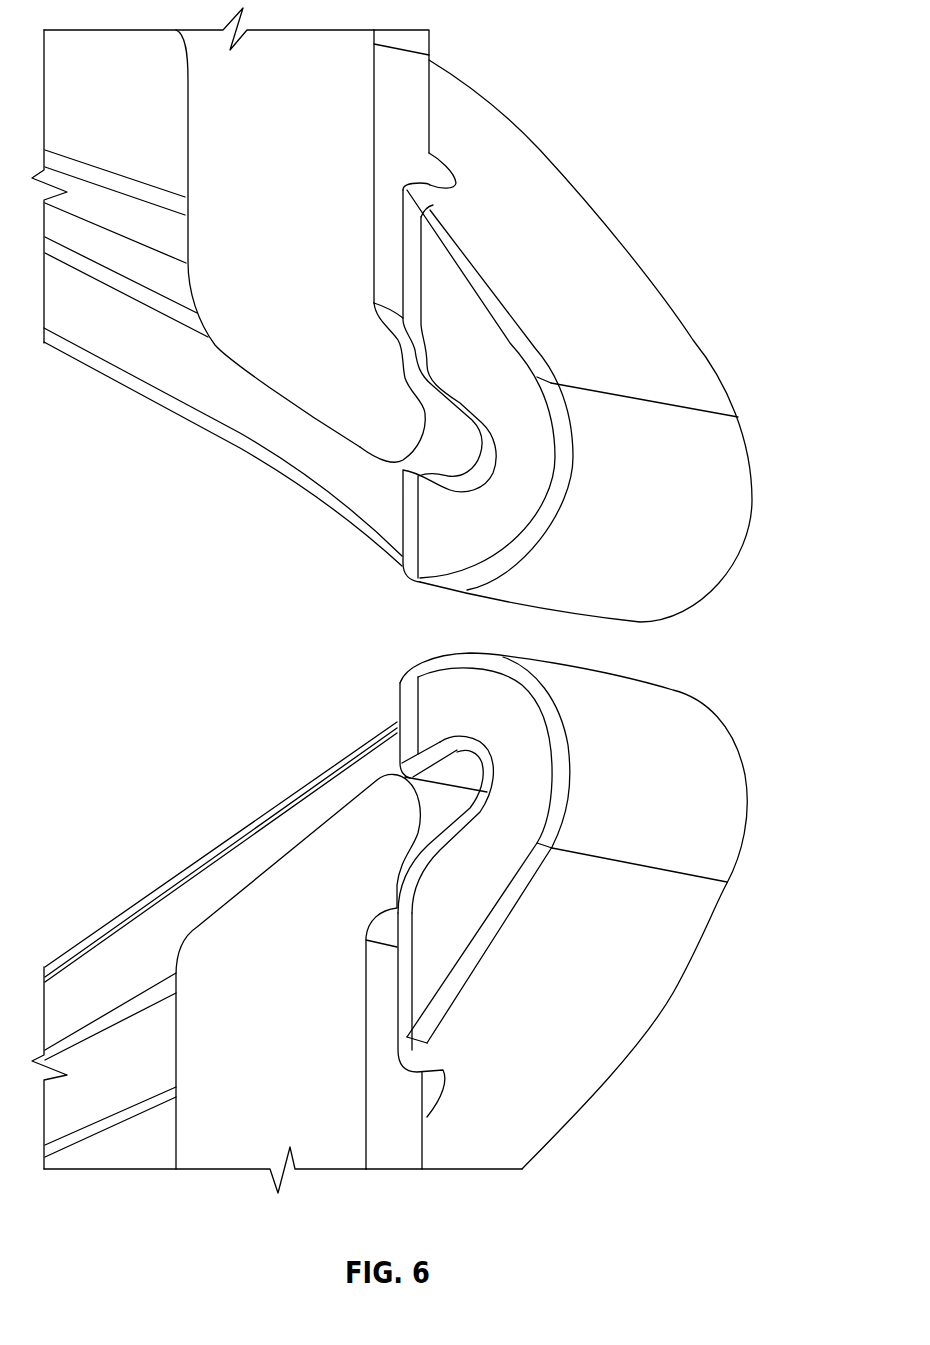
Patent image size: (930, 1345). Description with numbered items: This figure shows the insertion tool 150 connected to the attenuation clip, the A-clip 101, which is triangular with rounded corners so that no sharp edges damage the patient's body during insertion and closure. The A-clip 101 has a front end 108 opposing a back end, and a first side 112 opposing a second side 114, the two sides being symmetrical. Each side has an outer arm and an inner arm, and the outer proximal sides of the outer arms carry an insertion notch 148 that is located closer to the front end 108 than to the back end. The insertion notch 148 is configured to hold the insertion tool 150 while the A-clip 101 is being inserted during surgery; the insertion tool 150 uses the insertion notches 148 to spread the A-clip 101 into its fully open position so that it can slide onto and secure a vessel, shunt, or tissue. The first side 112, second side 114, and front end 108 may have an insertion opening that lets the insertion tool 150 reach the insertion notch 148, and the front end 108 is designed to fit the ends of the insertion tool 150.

The A-clip 101 is at (567, 175).
The front end 108 is at (735, 497).
The first side 112 is at (488, 143).
The second side 114 is at (517, 1127).
The insertion notch 148 is at (418, 342).
The insertion tool 150 is at (202, 107).